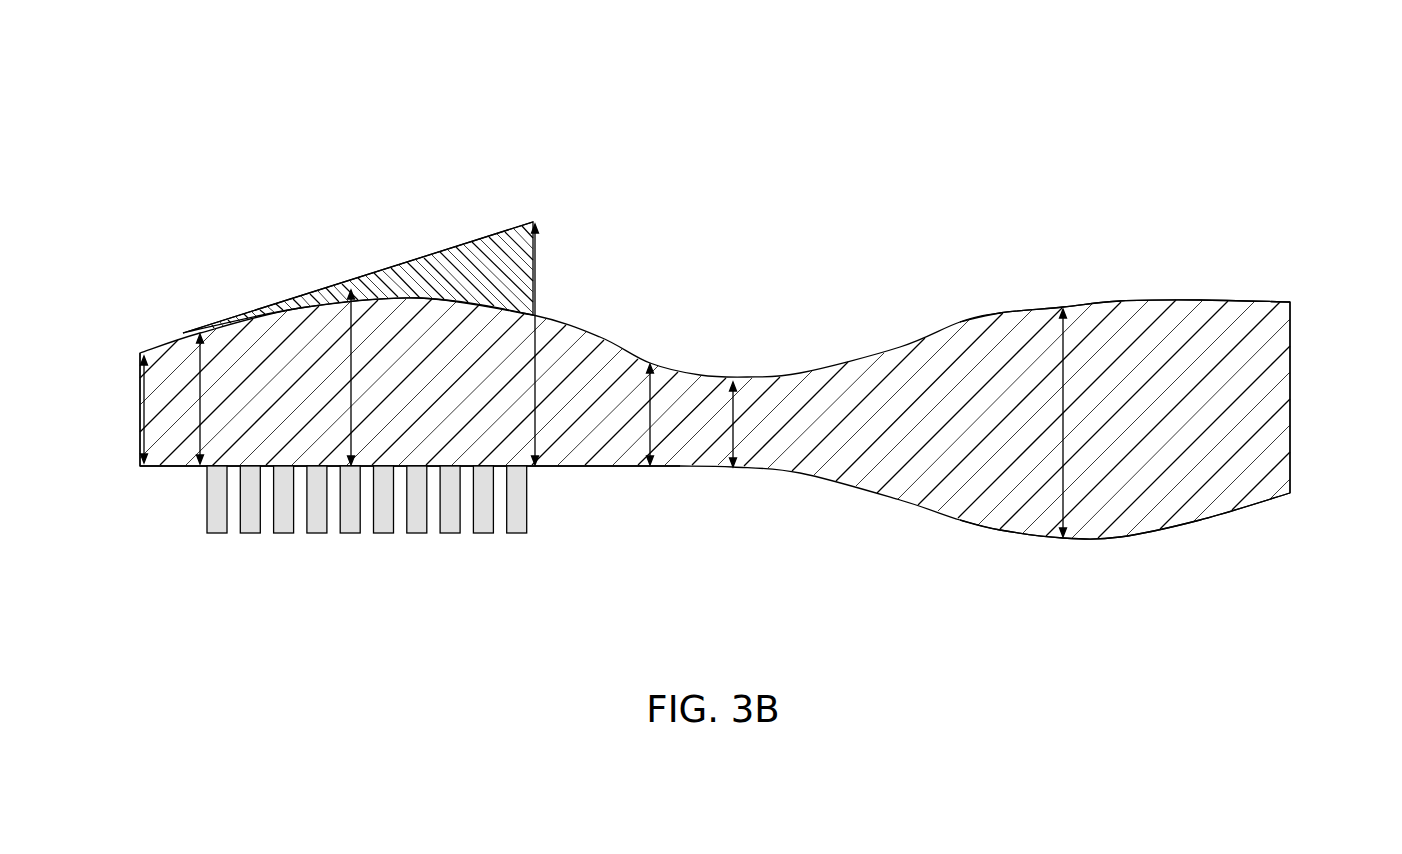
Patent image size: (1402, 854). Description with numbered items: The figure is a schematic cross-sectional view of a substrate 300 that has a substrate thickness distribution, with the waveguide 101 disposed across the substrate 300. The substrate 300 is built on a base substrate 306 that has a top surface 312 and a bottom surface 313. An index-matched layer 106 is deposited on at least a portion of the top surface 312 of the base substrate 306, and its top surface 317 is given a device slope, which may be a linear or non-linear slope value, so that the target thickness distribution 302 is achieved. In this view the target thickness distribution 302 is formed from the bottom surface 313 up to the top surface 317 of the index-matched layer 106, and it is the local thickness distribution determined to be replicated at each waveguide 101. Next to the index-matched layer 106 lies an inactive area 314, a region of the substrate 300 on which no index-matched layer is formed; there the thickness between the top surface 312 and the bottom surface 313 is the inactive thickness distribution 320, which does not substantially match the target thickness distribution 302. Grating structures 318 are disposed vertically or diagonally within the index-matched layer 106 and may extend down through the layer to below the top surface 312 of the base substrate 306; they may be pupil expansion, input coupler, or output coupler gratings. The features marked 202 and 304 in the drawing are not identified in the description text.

The substrate 300 is at (150, 114).
The waveguide 101 is at (91, 220).
The target thickness distribution 302 is at (340, 333).
The index-matched layer 106 is at (385, 282).
The top surface of the index-matched layer 317 is at (440, 250).
The maximum head thickness 202 is at (540, 333).
The inactive area 314 is at (740, 270).
The neck thickness 304 is at (733, 410).
The inactive thickness distribution 320 is at (652, 420).
The grating structure 318 is at (350, 534).
The top surface of the base substrate 312 is at (1243, 300).
The base substrate 306 is at (1292, 385).
The bottom surface of the base substrate 313 is at (1248, 502).